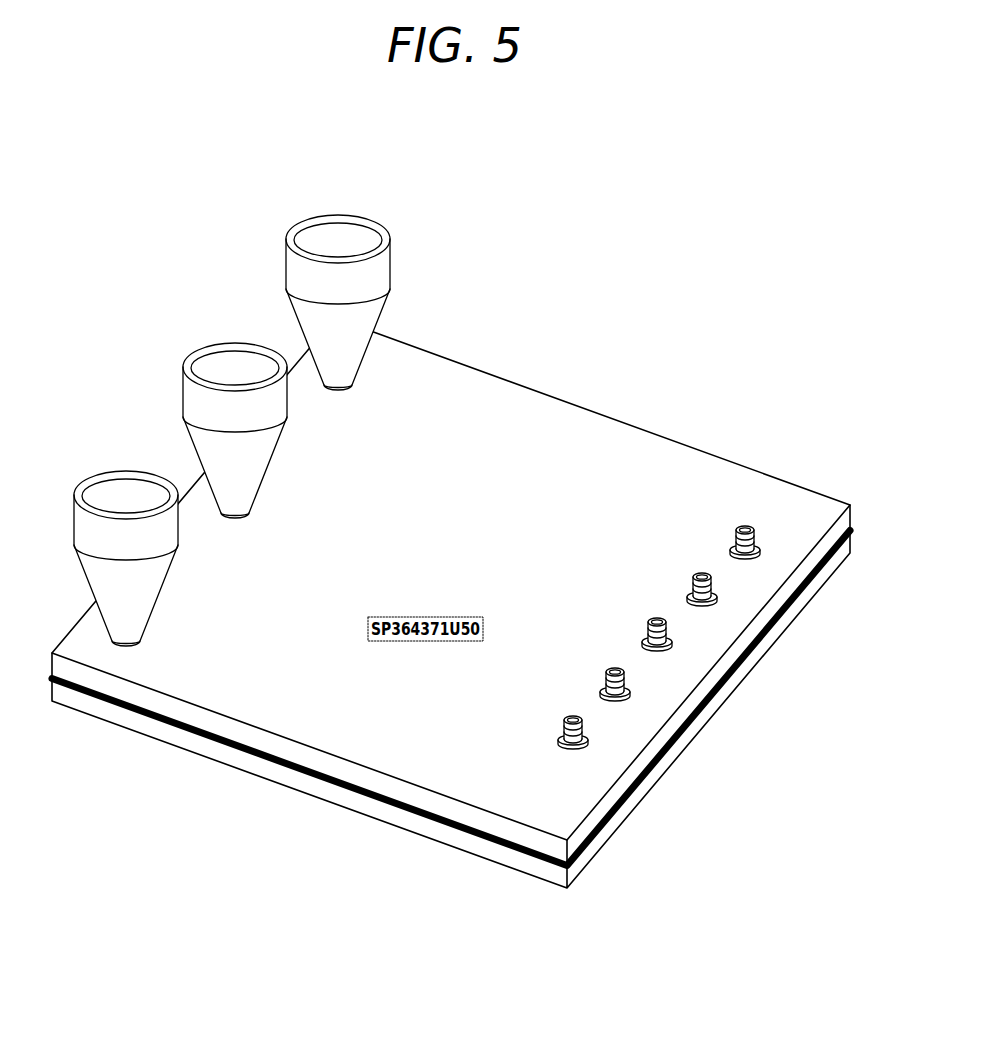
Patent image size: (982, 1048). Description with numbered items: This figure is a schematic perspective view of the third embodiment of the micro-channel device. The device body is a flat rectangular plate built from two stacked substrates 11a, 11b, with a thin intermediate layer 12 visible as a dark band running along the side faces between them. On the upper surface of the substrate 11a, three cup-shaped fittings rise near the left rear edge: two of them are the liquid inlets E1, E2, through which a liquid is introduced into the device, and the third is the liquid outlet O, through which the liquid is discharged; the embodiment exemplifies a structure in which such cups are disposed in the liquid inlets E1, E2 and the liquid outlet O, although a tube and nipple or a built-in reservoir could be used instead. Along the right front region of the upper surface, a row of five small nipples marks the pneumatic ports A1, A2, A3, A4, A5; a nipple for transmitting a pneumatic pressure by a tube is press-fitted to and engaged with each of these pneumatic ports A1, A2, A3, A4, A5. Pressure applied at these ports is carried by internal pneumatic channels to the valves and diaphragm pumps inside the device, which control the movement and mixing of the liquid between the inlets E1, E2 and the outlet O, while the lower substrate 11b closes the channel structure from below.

The substrate 11a is at (590, 419).
The substrate 11b is at (580, 862).
The intermediate layer 12 is at (200, 735).
The liquid inlet E1 is at (140, 643).
The liquid inlet E2 is at (353, 385).
The liquid outlet O is at (250, 517).
The pneumatic port A1 is at (587, 750).
The pneumatic port A2 is at (760, 555).
The pneumatic port A3 is at (629, 700).
The pneumatic port A4 is at (716, 602).
The pneumatic port A5 is at (671, 650).